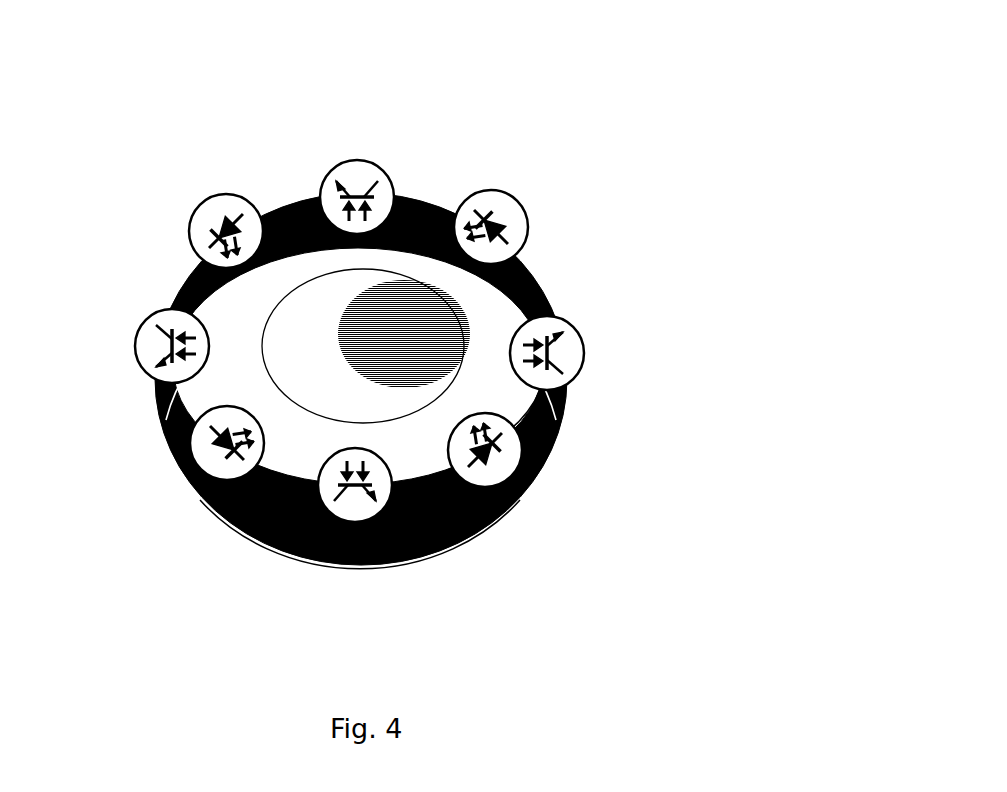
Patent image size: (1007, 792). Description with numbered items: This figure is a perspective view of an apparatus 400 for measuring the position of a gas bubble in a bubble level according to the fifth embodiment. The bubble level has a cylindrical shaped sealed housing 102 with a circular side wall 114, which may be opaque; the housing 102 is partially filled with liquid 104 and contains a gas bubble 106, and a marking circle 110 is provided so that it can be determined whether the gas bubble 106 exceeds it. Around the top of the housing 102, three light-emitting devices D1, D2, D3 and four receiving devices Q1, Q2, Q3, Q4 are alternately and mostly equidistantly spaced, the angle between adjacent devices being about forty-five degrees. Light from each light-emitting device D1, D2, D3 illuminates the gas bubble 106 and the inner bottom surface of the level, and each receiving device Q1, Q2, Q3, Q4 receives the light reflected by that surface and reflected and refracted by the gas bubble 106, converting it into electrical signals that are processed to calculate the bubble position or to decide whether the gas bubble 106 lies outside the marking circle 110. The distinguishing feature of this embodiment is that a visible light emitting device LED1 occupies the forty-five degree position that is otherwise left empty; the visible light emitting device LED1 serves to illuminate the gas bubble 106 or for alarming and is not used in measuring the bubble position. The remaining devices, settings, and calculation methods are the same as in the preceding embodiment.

The apparatus 400 is at (656, 55).
The housing 102 is at (552, 283).
The liquid 104 is at (520, 407).
The gas bubble 106 is at (382, 313).
The marking circle 110 is at (265, 320).
The circular side wall 114 is at (462, 545).
The light-emitting device D1 is at (506, 227).
The light-emitting device D2 is at (228, 220).
The light-emitting device D3 is at (215, 443).
The visible light emitting device LED1 is at (482, 462).
The receiving device Q1 is at (554, 365).
The receiving device Q2 is at (369, 193).
The receiving device Q3 is at (166, 334).
The receiving device Q4 is at (342, 485).